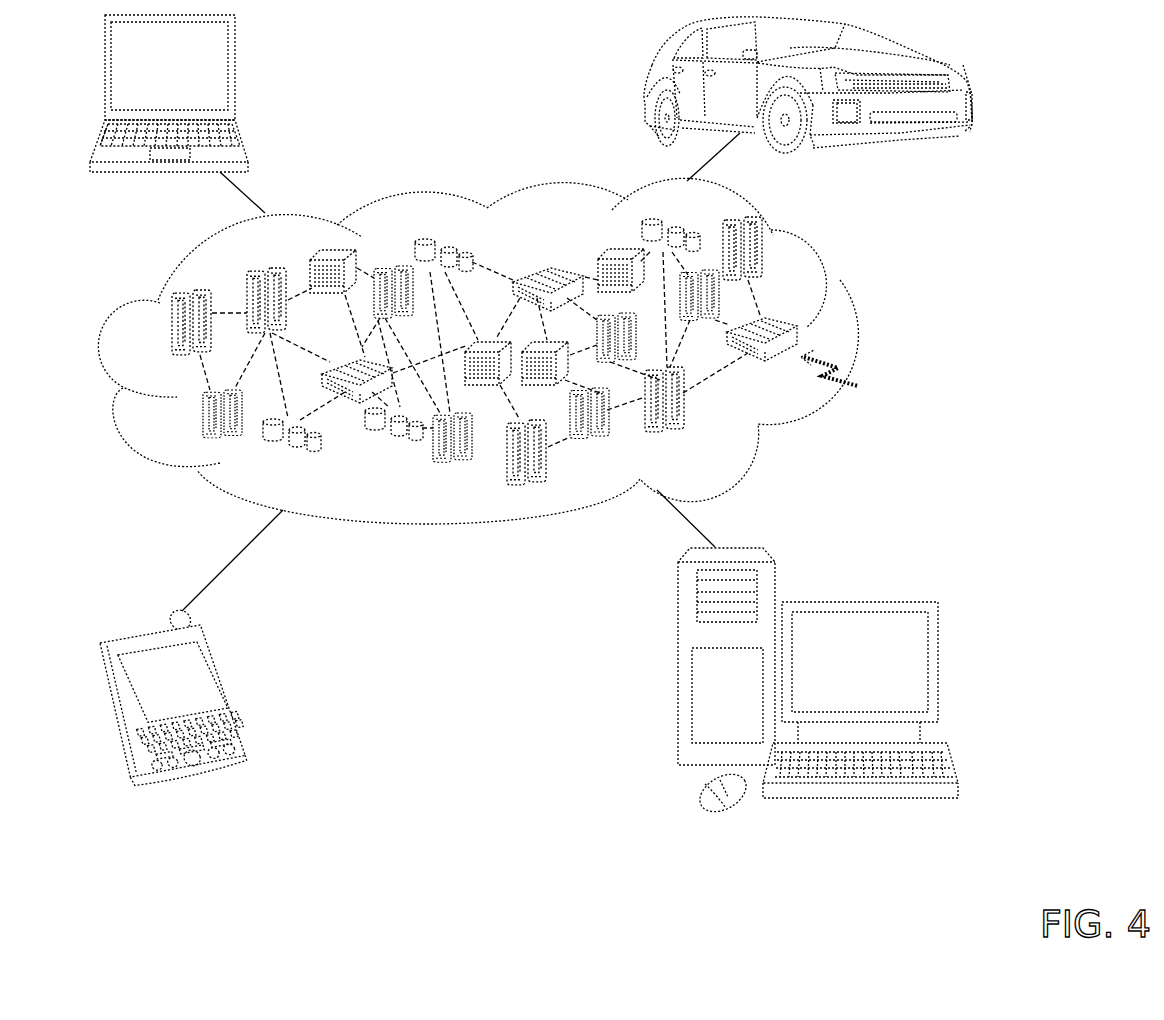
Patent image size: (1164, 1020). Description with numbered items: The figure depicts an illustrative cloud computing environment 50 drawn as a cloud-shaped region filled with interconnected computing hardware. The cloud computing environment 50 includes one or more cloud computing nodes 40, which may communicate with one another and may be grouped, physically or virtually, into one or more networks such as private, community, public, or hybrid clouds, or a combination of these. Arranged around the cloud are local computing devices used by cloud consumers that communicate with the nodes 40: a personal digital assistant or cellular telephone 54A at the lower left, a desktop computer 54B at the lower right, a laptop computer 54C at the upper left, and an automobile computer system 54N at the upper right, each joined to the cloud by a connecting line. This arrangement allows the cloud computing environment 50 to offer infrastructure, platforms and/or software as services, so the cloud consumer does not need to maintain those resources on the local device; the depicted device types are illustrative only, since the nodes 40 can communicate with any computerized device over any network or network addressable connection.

The laptop computer 54C is at (236, 72).
The automobile computer system 54N is at (648, 88).
The cloud computing environment 50 is at (857, 330).
The cloud computing nodes 40 is at (849, 376).
The personal digital assistant (PDA) or cellular telephone 54A is at (231, 692).
The desktop computer 54B is at (857, 602).